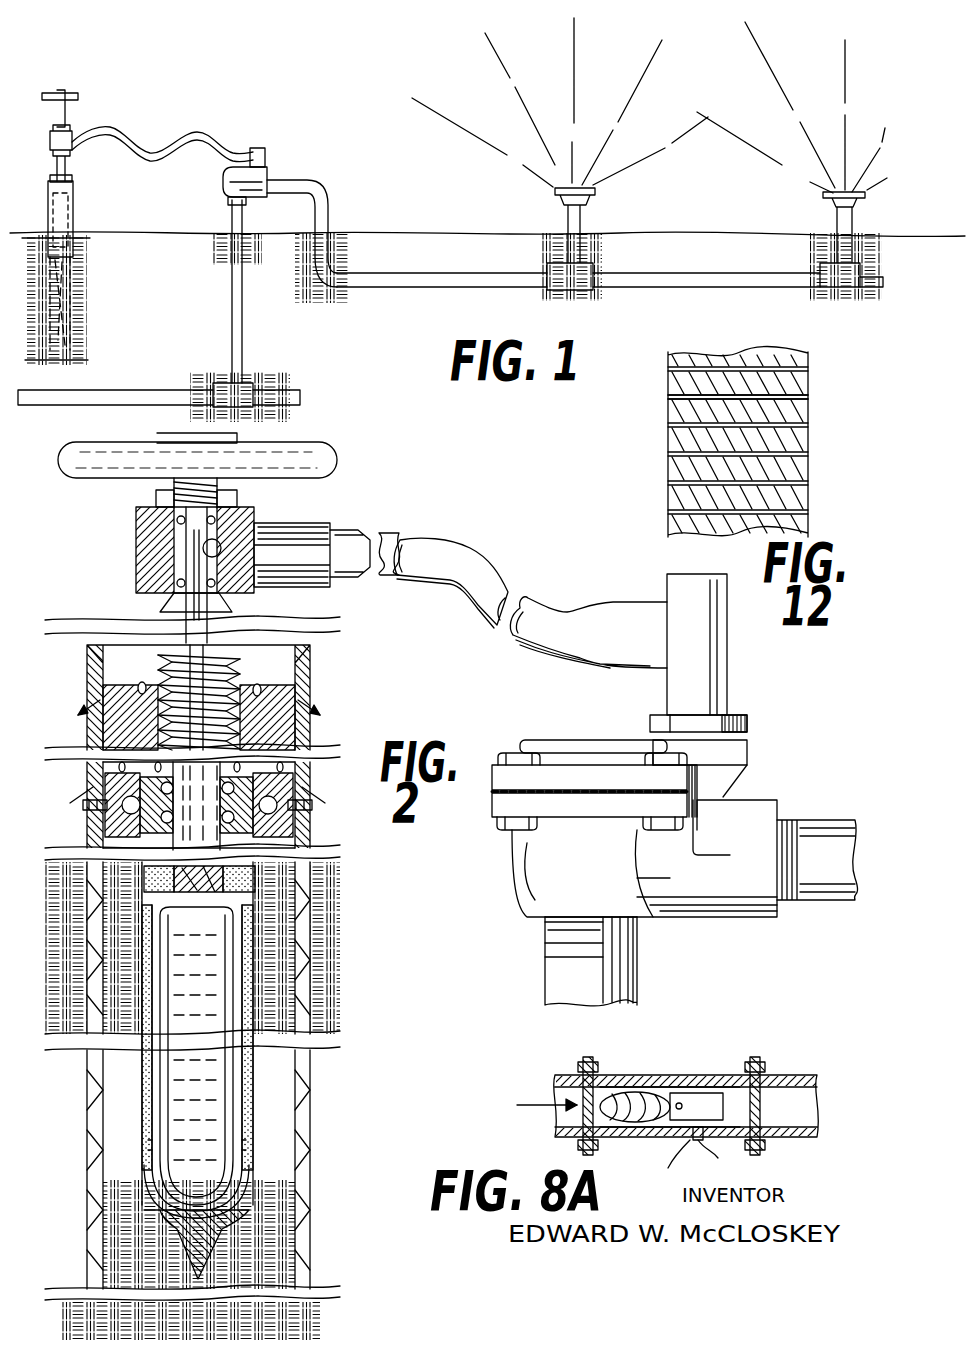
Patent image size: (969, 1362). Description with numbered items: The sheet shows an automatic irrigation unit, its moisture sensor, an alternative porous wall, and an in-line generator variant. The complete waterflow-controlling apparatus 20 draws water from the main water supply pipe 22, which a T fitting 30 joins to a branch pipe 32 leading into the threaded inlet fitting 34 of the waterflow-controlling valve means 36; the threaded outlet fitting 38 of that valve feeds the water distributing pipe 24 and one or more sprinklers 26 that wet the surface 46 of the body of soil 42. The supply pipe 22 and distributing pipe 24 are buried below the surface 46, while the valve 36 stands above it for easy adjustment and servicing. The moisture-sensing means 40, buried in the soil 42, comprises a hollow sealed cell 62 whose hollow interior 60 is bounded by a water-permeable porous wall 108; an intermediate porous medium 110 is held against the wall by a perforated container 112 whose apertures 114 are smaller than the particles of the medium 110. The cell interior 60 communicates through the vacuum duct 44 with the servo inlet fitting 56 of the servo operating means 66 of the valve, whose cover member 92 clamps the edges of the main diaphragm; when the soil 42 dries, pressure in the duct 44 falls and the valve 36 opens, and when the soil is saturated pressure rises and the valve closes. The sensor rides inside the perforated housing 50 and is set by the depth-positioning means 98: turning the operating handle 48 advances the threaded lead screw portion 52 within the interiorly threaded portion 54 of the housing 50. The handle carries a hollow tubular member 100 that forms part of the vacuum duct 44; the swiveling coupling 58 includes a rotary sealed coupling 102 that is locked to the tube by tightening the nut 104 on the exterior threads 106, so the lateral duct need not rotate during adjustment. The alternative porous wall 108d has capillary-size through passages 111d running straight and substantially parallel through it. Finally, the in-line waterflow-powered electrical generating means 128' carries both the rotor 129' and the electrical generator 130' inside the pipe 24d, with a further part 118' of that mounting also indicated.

In FIG. 1, the waterflow-controlling apparatus 20 is at (618, 72).
In FIG. 1, the main water supply pipe 22 is at (137, 395).
In FIG. 1, the water distributing pipe 24 is at (464, 290).
In FIG. 2, the water distributing pipe 24 is at (844, 903).
In FIG. 8A, the pipe section 24d is at (782, 1076).
In FIG. 1, the sprinklers 26 is at (582, 208).
In FIG. 1, the T fitting 30 is at (250, 395).
In FIG. 1, the branch pipe 32 is at (232, 325).
In FIG. 2, the branch pipe 32 is at (567, 982).
In FIG. 1, the threaded inlet fitting 34 is at (230, 204).
In FIG. 2, the threaded inlet fitting 34 is at (567, 918).
In FIG. 1, the waterflow-controlling valve means 36 is at (294, 162).
In FIG. 2, the waterflow-controlling valve means 36 is at (613, 863).
In FIG. 1, the threaded outlet fitting 38 is at (275, 186).
In FIG. 2, the threaded outlet fitting 38 is at (785, 822).
In FIG. 2, the moisture-sensing means 40 is at (422, 672).
In FIG. 1, the body of soil 42 is at (78, 293).
In FIG. 2, the body of soil 42 is at (305, 968).
In FIG. 1, the vacuum duct 44 is at (122, 140).
In FIG. 2, the vacuum duct 44 is at (545, 605).
In FIG. 1, the surface of the body of soil 46 is at (404, 230).
In FIG. 1, the operating handle 48 is at (80, 85).
In FIG. 2, the operating handle 48 is at (337, 455).
In FIG. 1, the perforated housing 50 is at (70, 256).
In FIG. 2, the perforated housing 50 is at (305, 908).
In FIG. 1, the threaded lead screw portion 52 is at (68, 205).
In FIG. 2, the threaded lead screw portion 52 is at (270, 672).
In FIG. 1, the interiorly threaded portion 54 is at (44, 202).
In FIG. 2, the interiorly threaded portion 54 is at (268, 708).
In FIG. 2, the servo inlet fitting 56 is at (718, 716).
In FIG. 1, the rotatable swiveling coupling 58 is at (46, 143).
In FIG. 2, the rotatable swiveling coupling 58 is at (132, 550).
In FIG. 2, the hollow interior of the cell 60 is at (250, 855).
In FIG. 2, the hollow sealed cell 62 is at (253, 1072).
In FIG. 2, the servo operating means 66 is at (752, 754).
In FIG. 2, the cover member 92 is at (588, 755).
In FIG. 2, the depth-positioning means 98 is at (330, 438).
In FIG. 1, the hollow tubular member 100 is at (72, 176).
In FIG. 2, the hollow tubular member 100 is at (218, 625).
In FIG. 2, the rotary sealed coupling 102 is at (137, 582).
In FIG. 2, the nut 104 is at (220, 484).
In FIG. 2, the exterior threads 106 is at (222, 500).
In FIG. 2, the porous wall 108 is at (254, 1140).
In FIG. 12, the porous wall 108d is at (668, 440).
In FIG. 2, the intermediate porous medium 110 is at (243, 1085).
In FIG. 12, the capillary-size through passages 111d is at (740, 400).
In FIG. 2, the perforated container 112 is at (250, 1105).
In FIG. 2, the apertures 114 is at (292, 1172).
In FIG. 8A, the drain 118' is at (669, 1156).
In FIG. 8A, the waterflow-powered electrical generating means 128' is at (794, 999).
In FIG. 8A, the rotor 129' is at (708, 1069).
In FIG. 8A, the electrical generator 130' is at (732, 1107).